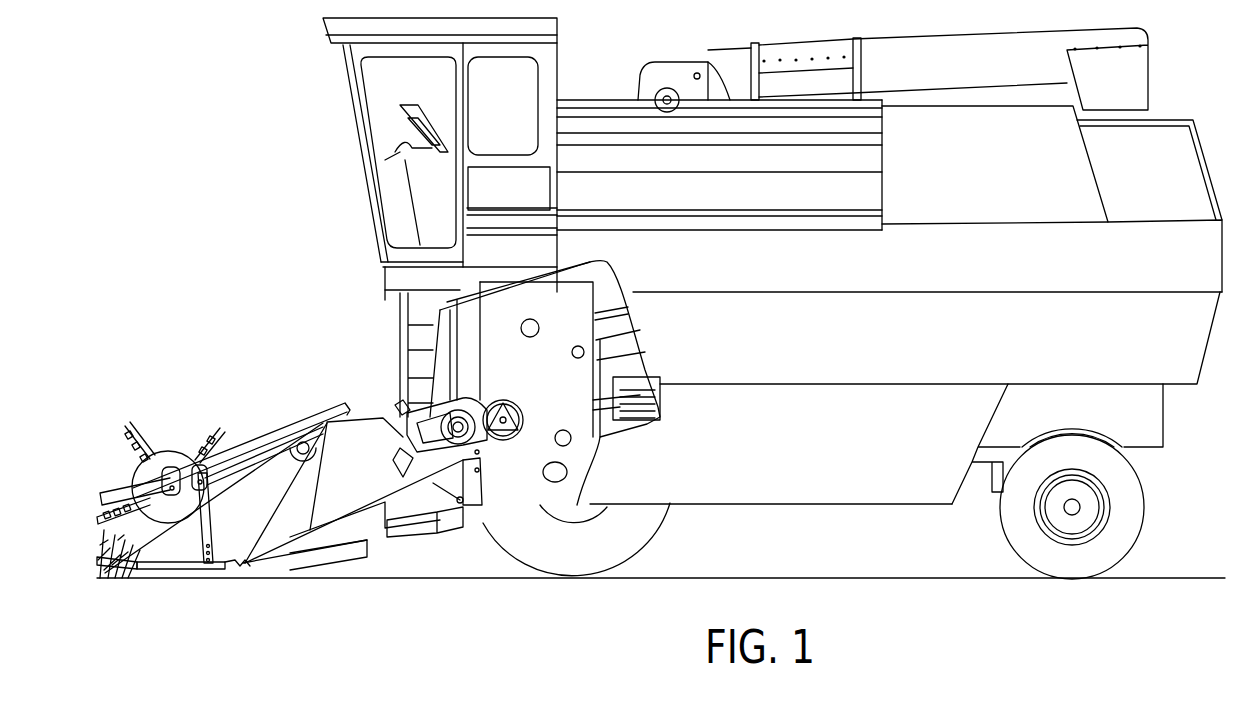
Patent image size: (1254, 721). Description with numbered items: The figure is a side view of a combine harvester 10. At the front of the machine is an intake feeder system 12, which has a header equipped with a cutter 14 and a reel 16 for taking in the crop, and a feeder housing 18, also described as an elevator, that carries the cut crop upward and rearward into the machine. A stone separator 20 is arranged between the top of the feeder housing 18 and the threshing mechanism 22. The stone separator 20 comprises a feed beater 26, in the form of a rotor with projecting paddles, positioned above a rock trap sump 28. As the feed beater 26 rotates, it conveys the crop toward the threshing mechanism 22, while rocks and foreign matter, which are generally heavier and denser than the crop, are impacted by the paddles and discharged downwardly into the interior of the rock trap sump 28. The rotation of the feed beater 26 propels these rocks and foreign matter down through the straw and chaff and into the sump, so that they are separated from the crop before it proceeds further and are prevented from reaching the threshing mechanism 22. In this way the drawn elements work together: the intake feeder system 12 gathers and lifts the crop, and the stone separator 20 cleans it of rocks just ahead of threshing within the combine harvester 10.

The combine harvester 10 is at (280, 148).
The intake feeder system 12 is at (174, 302).
The cutter 14 is at (108, 570).
The reel 16 is at (200, 433).
The feeder housing 18 is at (345, 452).
The stone separator 20 is at (488, 440).
The threshing mechanism 22 is at (650, 430).
The feed beater 26 is at (455, 395).
The rock trap sump 28 is at (473, 490).